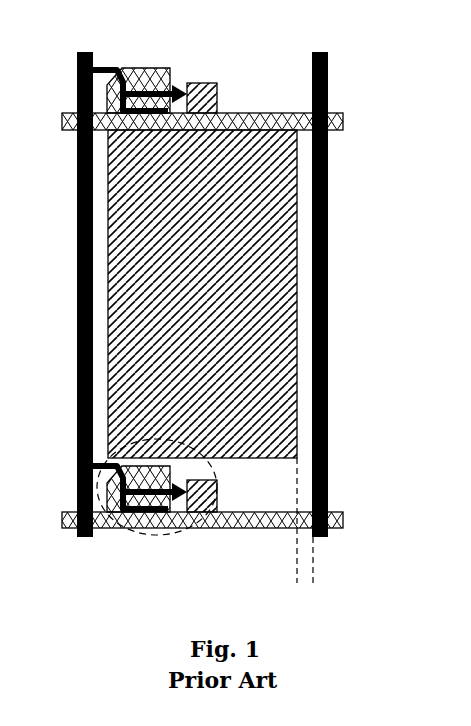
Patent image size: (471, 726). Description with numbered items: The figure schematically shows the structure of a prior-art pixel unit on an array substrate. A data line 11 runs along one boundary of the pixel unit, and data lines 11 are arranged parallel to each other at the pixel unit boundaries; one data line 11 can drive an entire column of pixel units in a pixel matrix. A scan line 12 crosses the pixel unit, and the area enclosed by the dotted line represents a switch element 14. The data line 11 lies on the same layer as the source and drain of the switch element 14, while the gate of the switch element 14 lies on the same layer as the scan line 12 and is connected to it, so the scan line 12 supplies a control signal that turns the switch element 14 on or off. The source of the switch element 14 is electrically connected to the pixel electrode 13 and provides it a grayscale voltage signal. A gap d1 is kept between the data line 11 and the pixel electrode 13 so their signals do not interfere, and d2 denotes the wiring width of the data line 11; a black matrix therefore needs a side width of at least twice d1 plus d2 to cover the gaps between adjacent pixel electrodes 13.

The data line 11 is at (328, 240).
The scan line 12 is at (332, 114).
The pixel electrode 13 is at (112, 257).
The switch element 14 is at (77, 494).
The gap between the data line and the pixel electrode d1 is at (343, 558).
The wiring width of the data line d2 is at (280, 487).